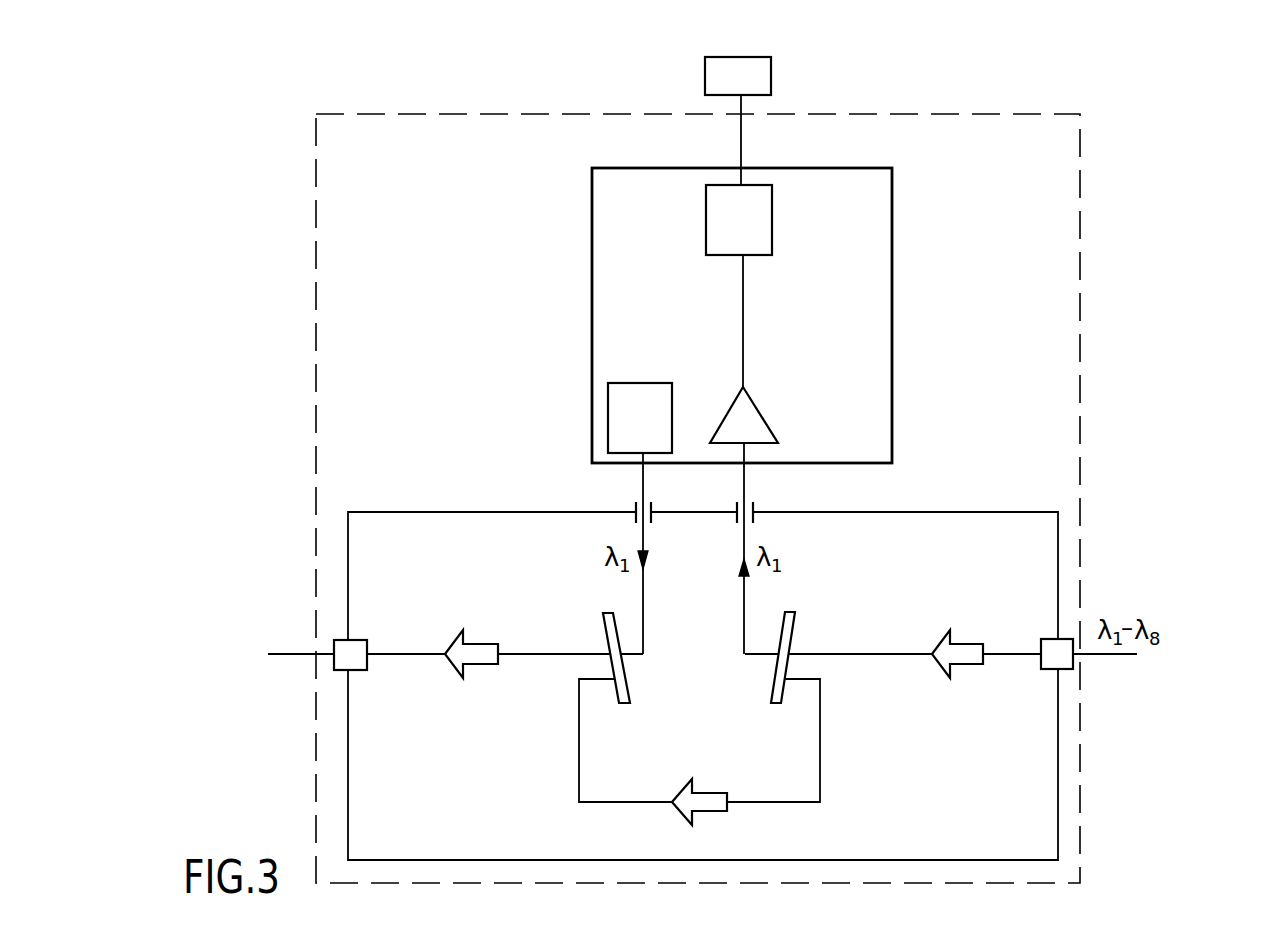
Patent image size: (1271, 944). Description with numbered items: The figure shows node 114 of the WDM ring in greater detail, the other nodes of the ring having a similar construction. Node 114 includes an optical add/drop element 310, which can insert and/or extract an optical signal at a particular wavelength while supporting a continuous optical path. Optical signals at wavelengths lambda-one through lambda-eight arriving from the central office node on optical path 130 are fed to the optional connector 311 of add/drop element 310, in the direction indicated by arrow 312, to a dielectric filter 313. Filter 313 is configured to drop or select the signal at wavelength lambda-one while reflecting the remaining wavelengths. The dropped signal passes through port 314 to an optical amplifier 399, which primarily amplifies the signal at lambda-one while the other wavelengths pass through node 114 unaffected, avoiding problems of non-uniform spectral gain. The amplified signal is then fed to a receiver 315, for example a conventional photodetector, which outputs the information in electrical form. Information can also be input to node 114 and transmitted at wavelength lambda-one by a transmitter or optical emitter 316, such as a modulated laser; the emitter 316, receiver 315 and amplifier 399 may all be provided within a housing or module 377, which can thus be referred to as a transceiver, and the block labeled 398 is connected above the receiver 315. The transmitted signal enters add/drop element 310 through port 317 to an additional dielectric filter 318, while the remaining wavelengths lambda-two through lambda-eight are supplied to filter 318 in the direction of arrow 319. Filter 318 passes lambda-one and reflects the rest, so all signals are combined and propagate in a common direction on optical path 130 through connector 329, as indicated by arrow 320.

The node 114 is at (1083, 830).
The optical add/drop element 310 is at (1058, 531).
The housing or module 377 is at (892, 311).
The forward error correction unit 398 is at (771, 86).
The receiver 315 is at (772, 233).
The transmitter or optical emitter 316 is at (650, 383).
The optical amplifier 399 is at (752, 401).
The port 317 is at (636, 505).
The port 314 is at (754, 508).
The dielectric filter 318 is at (603, 614).
The dielectric filter 313 is at (797, 612).
The arrow 319 is at (719, 813).
The arrow 320 is at (478, 668).
The arrow 312 is at (960, 664).
The connector 311 is at (1073, 669).
The connector 329 is at (365, 643).
The optical path 130 is at (300, 657).